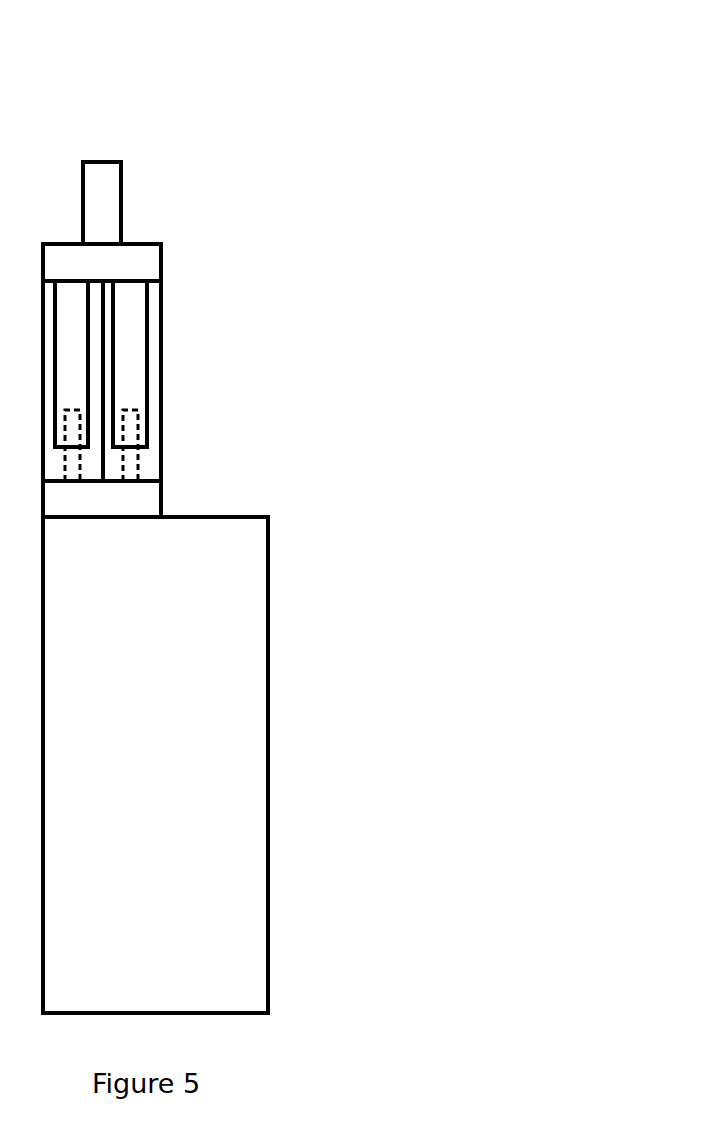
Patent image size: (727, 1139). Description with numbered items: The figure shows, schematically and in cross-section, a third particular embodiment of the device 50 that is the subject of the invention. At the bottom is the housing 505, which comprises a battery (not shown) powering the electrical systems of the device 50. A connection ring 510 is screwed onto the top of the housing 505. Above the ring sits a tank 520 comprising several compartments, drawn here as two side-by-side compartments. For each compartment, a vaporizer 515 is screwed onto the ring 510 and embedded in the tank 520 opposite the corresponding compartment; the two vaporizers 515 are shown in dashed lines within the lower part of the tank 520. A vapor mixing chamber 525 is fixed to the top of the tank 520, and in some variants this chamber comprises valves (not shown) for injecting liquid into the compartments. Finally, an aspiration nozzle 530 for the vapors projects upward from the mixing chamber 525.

The device 50 is at (126, 100).
The housing 505 is at (253, 578).
The connection ring 510 is at (138, 501).
The vaporizer 515 is at (137, 423).
The tank 520 is at (152, 303).
The vapor mixing chamber 525 is at (147, 260).
The aspiration nozzle 530 is at (98, 188).